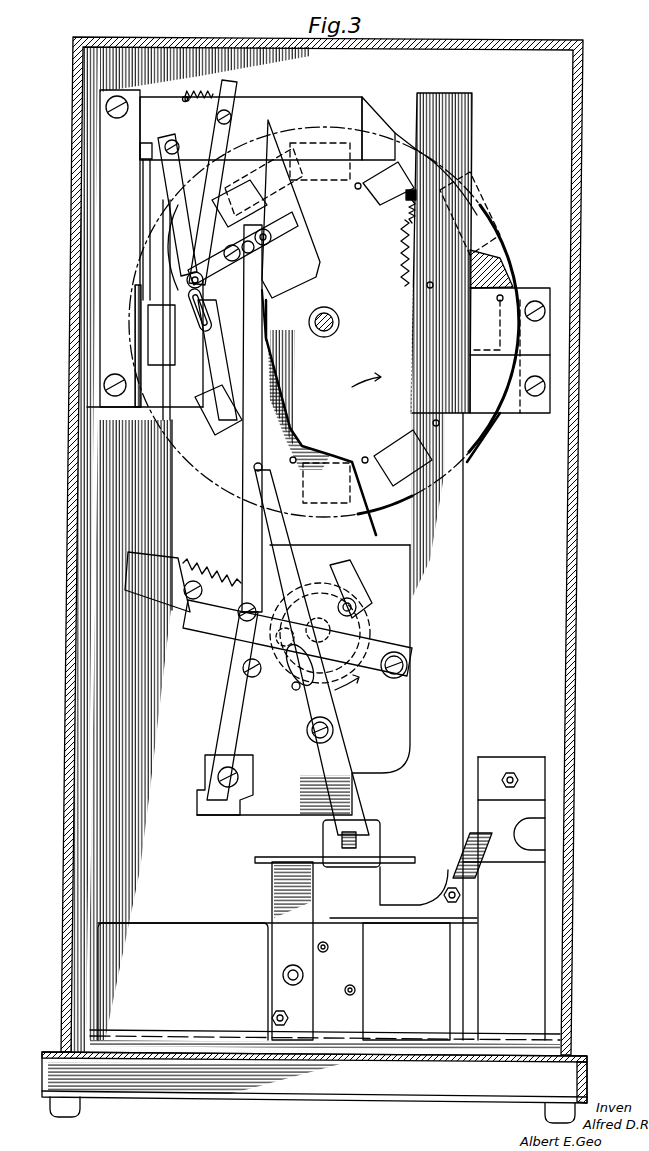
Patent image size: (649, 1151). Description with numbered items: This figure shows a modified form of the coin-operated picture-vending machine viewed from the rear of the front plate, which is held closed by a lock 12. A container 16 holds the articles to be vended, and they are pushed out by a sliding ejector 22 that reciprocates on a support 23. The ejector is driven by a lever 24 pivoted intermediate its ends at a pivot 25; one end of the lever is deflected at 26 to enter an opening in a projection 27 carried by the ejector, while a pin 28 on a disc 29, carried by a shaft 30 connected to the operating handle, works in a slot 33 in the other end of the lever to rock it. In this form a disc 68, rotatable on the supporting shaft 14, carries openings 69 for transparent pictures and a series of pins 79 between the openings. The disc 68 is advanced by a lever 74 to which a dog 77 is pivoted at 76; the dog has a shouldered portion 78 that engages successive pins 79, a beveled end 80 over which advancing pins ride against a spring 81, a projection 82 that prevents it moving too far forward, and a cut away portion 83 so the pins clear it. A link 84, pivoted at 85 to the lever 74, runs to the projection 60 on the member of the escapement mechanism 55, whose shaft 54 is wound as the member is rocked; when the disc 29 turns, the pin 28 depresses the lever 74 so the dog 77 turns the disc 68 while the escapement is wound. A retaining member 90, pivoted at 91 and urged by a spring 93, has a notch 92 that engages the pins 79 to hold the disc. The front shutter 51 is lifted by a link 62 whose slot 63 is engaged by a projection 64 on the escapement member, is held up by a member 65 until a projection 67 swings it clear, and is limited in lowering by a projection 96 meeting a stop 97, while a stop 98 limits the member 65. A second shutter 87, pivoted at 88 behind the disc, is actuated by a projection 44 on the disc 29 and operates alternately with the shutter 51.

The lock 12 is at (356, 989).
The supporting shaft 14 is at (338, 333).
The container 16 is at (467, 570).
The sliding ejector 22 is at (413, 858).
The support 23 is at (380, 872).
The lever 24 is at (350, 757).
The pivot 25 is at (408, 665).
The deflected end 26 is at (325, 845).
The projection 27 is at (340, 836).
The pin or projection 28 is at (288, 668).
The disc 29 is at (293, 595).
The shaft 30 is at (330, 642).
The slot 33 is at (292, 690).
The projection 44 is at (358, 609).
The shutter 51 is at (315, 97).
The shaft 54 is at (247, 300).
The escapement mechanism 55 is at (270, 216).
The projection or extension 60 is at (272, 238).
The link 62 is at (172, 178).
The slot 63 is at (210, 320).
The projection 64 is at (203, 279).
The member 65 is at (214, 114).
The projection 67 is at (252, 210).
The disc 68 is at (483, 440).
The openings 69 is at (356, 455).
The lever 74 is at (223, 618).
The pivot 76 is at (182, 612).
The dog 77 is at (170, 512).
The shouldered portion 78 is at (137, 287).
The pins or projections 79 is at (358, 190).
The beveled end 80 is at (200, 90).
The spring 81 is at (201, 562).
The projection 82 is at (165, 218).
The cut away portion 83 is at (212, 418).
The link 84 is at (263, 345).
The pivot 85 is at (252, 659).
The shutter 87 is at (268, 124).
The pivot 88 is at (296, 458).
The retaining dog or member 90 is at (412, 186).
The pivot 91 is at (503, 297).
The notch 92 is at (470, 196).
The spring 93 is at (403, 232).
The projection 96 is at (148, 143).
The stop 97 is at (137, 178).
The stop 98 is at (185, 99).